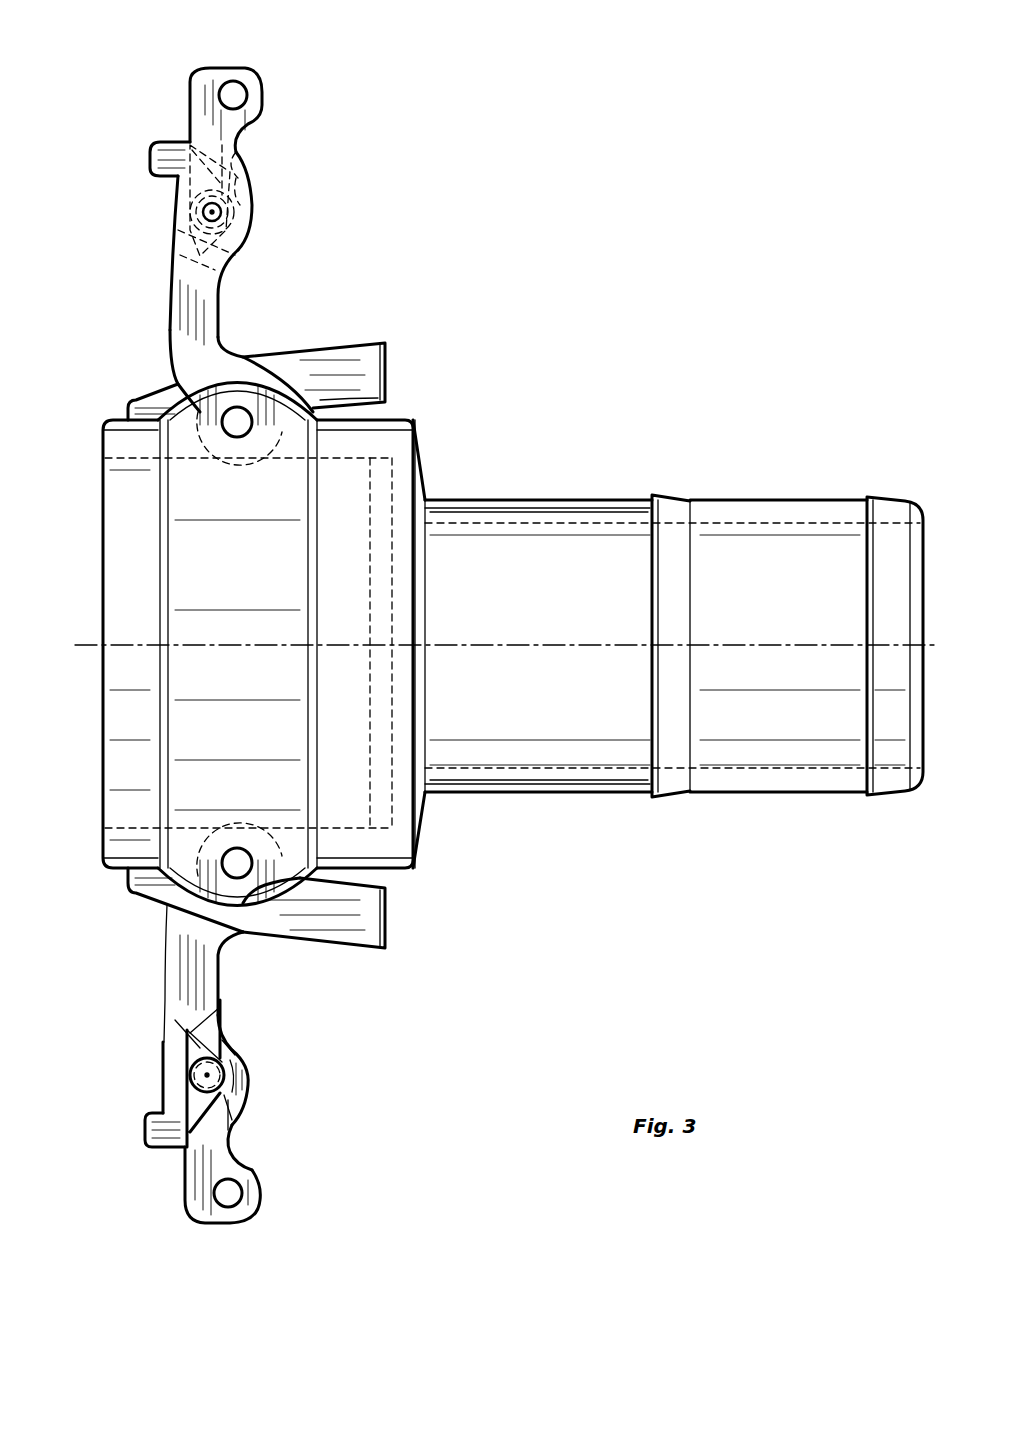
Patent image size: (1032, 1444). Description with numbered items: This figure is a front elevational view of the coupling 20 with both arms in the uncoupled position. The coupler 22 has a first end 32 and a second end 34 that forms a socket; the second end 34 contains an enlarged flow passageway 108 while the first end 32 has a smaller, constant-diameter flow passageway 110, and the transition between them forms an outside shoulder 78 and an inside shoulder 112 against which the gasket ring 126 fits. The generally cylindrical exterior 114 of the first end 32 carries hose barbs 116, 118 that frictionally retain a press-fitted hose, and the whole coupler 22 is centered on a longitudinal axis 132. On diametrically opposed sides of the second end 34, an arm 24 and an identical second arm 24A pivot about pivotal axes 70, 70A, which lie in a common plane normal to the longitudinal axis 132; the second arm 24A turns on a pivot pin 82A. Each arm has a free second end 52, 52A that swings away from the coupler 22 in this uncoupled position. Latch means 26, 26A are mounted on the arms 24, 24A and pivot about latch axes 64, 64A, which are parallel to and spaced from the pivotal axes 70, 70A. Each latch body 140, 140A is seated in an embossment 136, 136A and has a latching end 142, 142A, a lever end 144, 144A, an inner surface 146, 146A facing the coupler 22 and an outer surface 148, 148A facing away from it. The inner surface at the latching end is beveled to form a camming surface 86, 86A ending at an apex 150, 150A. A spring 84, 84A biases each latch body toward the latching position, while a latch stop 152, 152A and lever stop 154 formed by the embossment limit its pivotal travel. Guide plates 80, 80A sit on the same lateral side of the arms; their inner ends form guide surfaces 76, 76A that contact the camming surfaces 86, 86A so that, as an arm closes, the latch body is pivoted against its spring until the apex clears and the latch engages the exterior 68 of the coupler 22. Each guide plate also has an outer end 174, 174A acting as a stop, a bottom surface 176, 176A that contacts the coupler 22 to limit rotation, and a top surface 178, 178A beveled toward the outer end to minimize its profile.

The coupling 20 is at (436, 200).
The coupler 22 is at (539, 810).
The arm 24 is at (227, 1221).
The second arm 24A is at (238, 82).
The latch means 26 is at (185, 1075).
The second latch means 26A is at (175, 187).
The first end 32 is at (802, 680).
The second end 34 is at (130, 566).
The second end of arm 52 is at (228, 1193).
The second end of second arm 52A is at (233, 95).
The latch axis 64 is at (207, 1075).
The latch axis of second latch means 64A is at (213, 212).
The exterior of coupler 68 is at (398, 412).
The pivotal axis of arm 70 is at (236, 862).
The pivotal axis of second arm 70A is at (238, 424).
The guide surface 76 is at (385, 916).
The guide surface of second guide plate 76A is at (388, 362).
The shoulder 78 is at (425, 473).
The guide plate 80 is at (318, 940).
The second guide plate 80A is at (352, 350).
The pivot pin 82A is at (247, 430).
The bias means 84 is at (240, 1100).
The spring of second latch means 84A is at (250, 172).
The camming surface 86 is at (217, 1012).
The camming surface of second latch body 86A is at (227, 283).
The enlarged flow passageway 108 is at (128, 822).
The flow passageway 110 is at (792, 523).
The inside shoulder 112 is at (400, 540).
The exterior of first end 114 is at (570, 500).
The hose barb 116 is at (667, 513).
The hose barb 118 is at (893, 507).
The gasket ring 126 is at (400, 457).
The longitudinal axis 132 is at (700, 647).
The embossment 136 is at (247, 1082).
The embossment of second arm 136A is at (243, 220).
The latch body 140 is at (204, 1046).
The latch body of second latch means 140A is at (207, 170).
The latching end 142 is at (200, 1032).
The latching end of second latch body 142A is at (177, 248).
The lever end 144 is at (150, 1122).
The lever end of second latch body 144A is at (153, 172).
The inner surface 146 is at (250, 1078).
The inner surface of second latch body 146A is at (236, 140).
The outer surface 148 is at (167, 1097).
The outer surface of second latch body 148A is at (173, 212).
The apex 150 is at (172, 1001).
The apex of second latching end 150A is at (190, 288).
The latch stop 152 is at (227, 1050).
The latch stop of second latch means 152A is at (233, 247).
The lever stop 154 is at (240, 1115).
The outer end of guide plate 174 is at (143, 890).
The outer end of second guide plate 174A is at (143, 400).
The bottom surface of guide plate 176 is at (355, 882).
The bottom surface of second guide plate 176A is at (358, 408).
The top surface of guide plate 178 is at (347, 950).
The top surface of second guide plate 178A is at (297, 342).